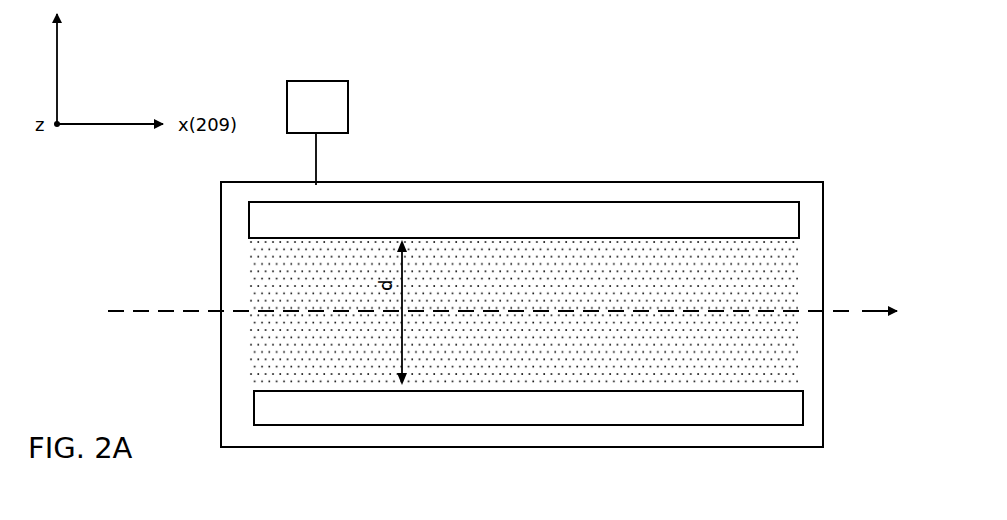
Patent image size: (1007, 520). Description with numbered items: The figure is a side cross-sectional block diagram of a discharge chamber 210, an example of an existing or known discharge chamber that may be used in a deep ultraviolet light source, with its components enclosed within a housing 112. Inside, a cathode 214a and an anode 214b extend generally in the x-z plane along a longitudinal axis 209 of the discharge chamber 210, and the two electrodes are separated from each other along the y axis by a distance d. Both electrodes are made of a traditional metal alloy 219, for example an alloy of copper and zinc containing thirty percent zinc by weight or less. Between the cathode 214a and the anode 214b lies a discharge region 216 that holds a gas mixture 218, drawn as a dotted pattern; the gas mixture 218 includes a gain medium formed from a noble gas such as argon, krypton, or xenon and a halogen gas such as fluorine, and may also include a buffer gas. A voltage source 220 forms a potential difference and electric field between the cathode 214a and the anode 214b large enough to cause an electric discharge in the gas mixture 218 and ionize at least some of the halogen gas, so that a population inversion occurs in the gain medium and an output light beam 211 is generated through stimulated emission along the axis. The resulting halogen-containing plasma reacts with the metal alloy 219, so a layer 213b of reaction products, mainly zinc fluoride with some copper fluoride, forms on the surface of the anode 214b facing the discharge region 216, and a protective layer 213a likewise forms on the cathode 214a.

The housing 112 is at (722, 181).
The longitudinal axis 209 is at (200, 311).
The discharge chamber 210 is at (656, 106).
The output light beam 211 is at (878, 312).
The protective layer 213a is at (578, 238).
The layer 213b is at (340, 390).
The cathode 214a is at (524, 220).
The anode 214b is at (528, 408).
The discharge region 216 is at (285, 283).
The gas mixture 218 is at (784, 270).
The metal alloy 219 is at (789, 221).
The voltage source 220 is at (317, 133).